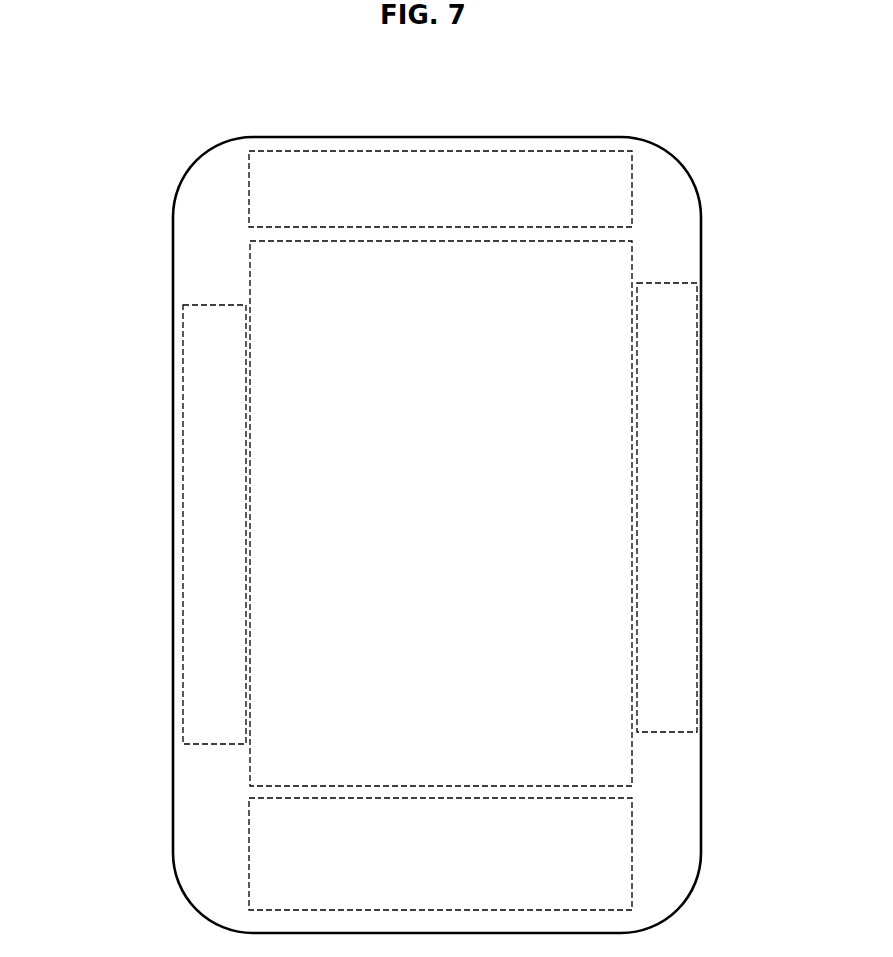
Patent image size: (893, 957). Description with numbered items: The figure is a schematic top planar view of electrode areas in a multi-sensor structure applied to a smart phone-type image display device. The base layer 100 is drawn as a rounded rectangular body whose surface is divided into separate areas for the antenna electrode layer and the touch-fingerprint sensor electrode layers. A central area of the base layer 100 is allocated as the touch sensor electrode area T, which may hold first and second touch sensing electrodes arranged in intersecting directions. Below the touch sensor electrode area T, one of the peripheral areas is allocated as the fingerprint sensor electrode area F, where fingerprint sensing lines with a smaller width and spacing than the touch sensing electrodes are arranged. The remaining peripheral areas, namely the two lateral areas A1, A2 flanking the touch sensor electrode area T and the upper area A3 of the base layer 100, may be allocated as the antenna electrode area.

The base layer 100 is at (193, 788).
The lateral area A1 is at (218, 302).
The lateral area A2 is at (663, 279).
The upper area A3 is at (459, 139).
The touch sensor electrode area T is at (636, 769).
The fingerprint sensor electrode area F is at (639, 857).